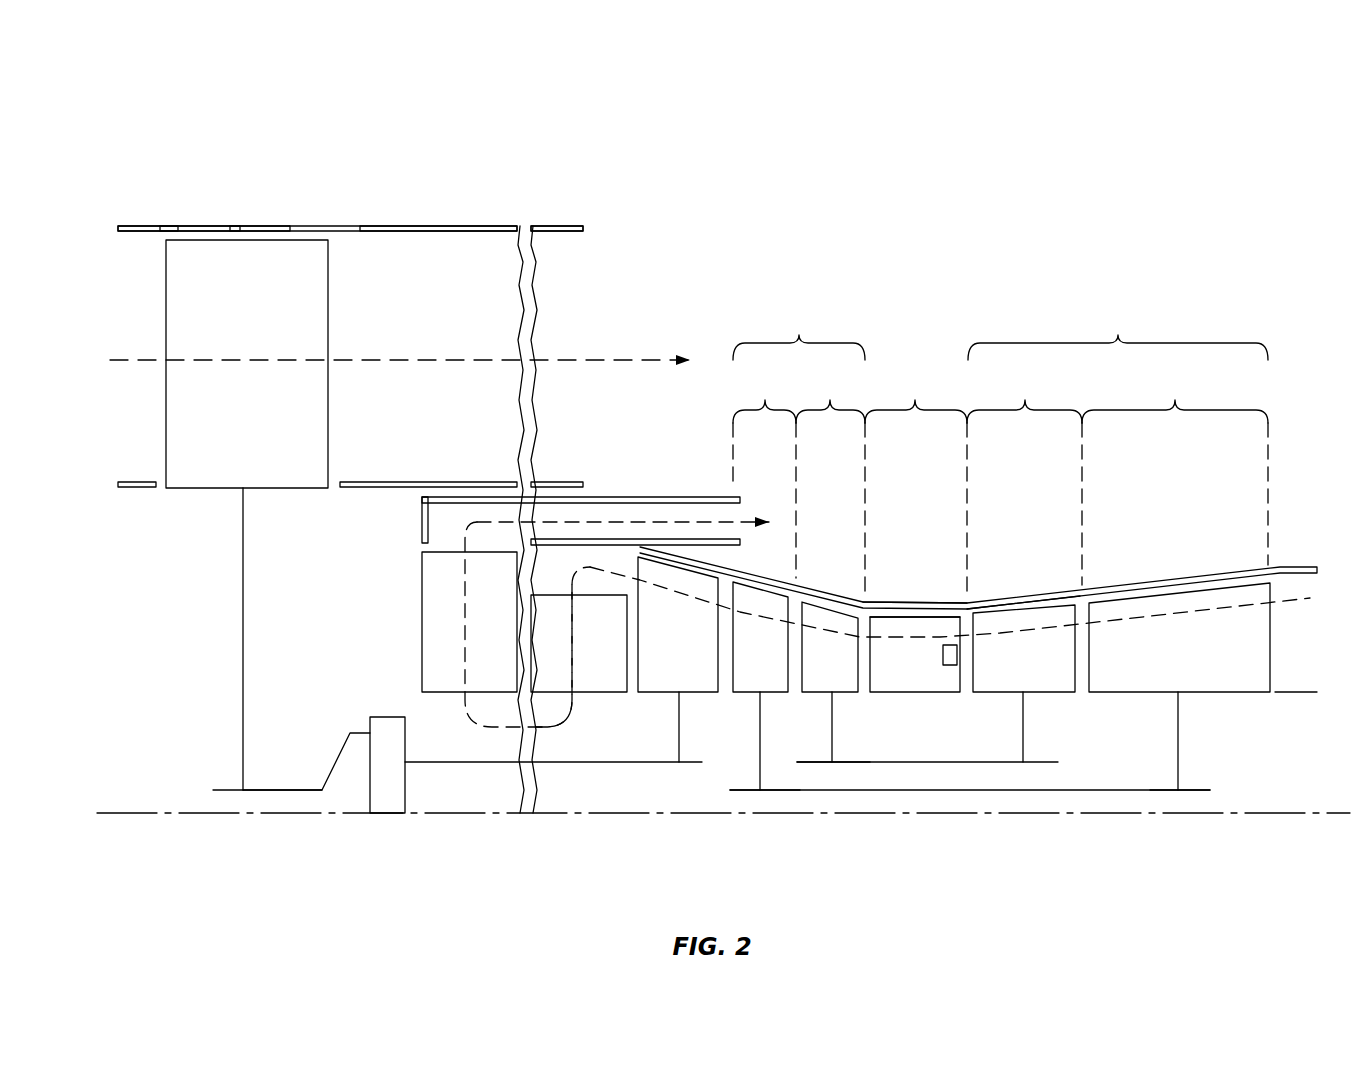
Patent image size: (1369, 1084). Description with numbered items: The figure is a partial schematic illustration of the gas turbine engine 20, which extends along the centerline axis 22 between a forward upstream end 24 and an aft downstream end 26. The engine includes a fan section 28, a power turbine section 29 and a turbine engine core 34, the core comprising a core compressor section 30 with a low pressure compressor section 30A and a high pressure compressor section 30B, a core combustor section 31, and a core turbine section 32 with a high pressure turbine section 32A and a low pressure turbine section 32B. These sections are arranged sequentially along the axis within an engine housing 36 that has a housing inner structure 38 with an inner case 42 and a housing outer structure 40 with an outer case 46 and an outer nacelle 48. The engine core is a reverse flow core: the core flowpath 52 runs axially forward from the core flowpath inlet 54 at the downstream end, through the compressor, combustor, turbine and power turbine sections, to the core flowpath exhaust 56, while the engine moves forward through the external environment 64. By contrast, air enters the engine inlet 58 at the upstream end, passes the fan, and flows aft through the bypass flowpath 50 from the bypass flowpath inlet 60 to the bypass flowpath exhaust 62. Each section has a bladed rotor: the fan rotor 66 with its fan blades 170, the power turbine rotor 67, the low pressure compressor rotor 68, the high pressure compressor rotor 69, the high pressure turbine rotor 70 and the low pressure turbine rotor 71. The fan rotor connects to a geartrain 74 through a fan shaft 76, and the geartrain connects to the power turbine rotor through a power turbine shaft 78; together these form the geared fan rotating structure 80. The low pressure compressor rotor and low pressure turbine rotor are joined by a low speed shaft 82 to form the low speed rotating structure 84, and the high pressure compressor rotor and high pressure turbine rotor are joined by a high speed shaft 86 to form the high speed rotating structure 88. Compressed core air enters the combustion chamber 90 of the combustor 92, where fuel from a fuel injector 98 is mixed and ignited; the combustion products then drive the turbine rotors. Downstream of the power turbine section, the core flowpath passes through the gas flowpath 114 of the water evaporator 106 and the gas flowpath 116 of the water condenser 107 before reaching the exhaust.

The gas turbine engine 20 is at (114, 109).
The centerline axis 22 is at (105, 820).
The upstream end 24 is at (118, 228).
The downstream end 26 is at (1320, 568).
The fan section 28 is at (259, 234).
The power turbine section 29 is at (680, 547).
The core compressor section 30 is at (1118, 331).
The low pressure compressor section 30A is at (1176, 531).
The high pressure compressor section 30B is at (1024, 531).
The core combustor section 31 is at (916, 483).
The core turbine section 32 is at (799, 331).
The high pressure turbine section 32A is at (830, 531).
The low pressure turbine section 32B is at (764, 531).
The turbine engine core 34 is at (704, 797).
The engine housing 36 is at (670, 223).
The housing inner structure 38 is at (623, 480).
The housing outer structure 40 is at (488, 222).
The inner case 42 is at (907, 603).
The outer case 46 is at (195, 228).
The outer nacelle 48 is at (403, 228).
The bypass flowpath 50 is at (400, 409).
The core flowpath 52 is at (1017, 625).
The core flowpath inlet 54 is at (1316, 634).
The core flowpath exhaust 56 is at (740, 508).
The engine inlet 58 is at (118, 295).
The bypass flowpath inlet 60 is at (340, 463).
The bypass flowpath exhaust 62 is at (580, 265).
The environment 64 is at (887, 192).
The fan rotor 66 is at (243, 553).
The power turbine rotor 67 is at (679, 733).
The low pressure compressor rotor 68 is at (1178, 725).
The high pressure compressor rotor 69 is at (1023, 725).
The high pressure turbine rotor 70 is at (832, 723).
The low pressure turbine rotor 71 is at (760, 740).
The geartrain 74 is at (392, 797).
The fan shaft 76 is at (280, 790).
The power turbine shaft 78 is at (470, 762).
The fan rotating structure 80 is at (237, 796).
The low speed shaft 82 is at (1112, 790).
The low speed rotating structure 84 is at (1189, 799).
The high speed shaft 86 is at (900, 762).
The high speed rotating structure 88 is at (828, 772).
The combustion chamber 90 is at (885, 679).
The combustor 92 is at (930, 617).
The fuel injector 98 is at (952, 680).
The water evaporator 106 is at (578, 639).
The water condenser 107 is at (475, 654).
The gas flowpath of the water evaporator 114 is at (575, 670).
The gas flowpath of the water condenser 116 is at (461, 612).
The fan blades 170 is at (230, 311).